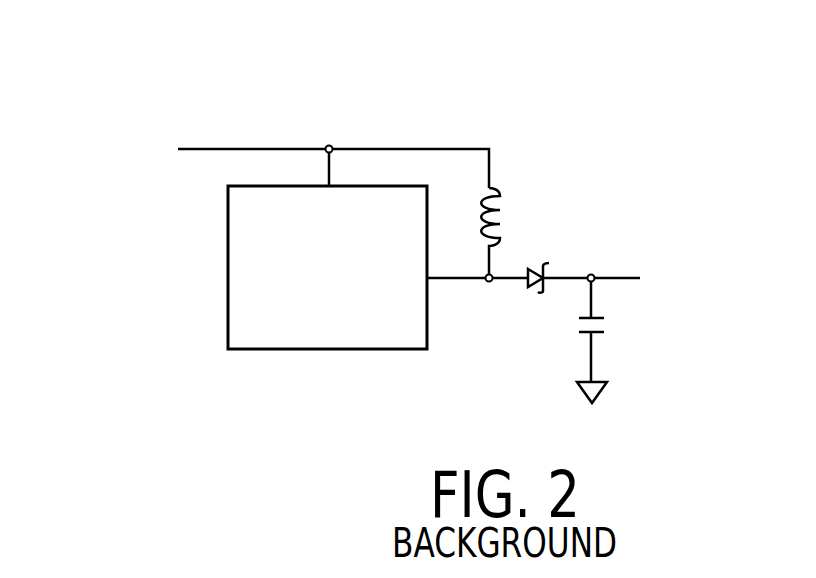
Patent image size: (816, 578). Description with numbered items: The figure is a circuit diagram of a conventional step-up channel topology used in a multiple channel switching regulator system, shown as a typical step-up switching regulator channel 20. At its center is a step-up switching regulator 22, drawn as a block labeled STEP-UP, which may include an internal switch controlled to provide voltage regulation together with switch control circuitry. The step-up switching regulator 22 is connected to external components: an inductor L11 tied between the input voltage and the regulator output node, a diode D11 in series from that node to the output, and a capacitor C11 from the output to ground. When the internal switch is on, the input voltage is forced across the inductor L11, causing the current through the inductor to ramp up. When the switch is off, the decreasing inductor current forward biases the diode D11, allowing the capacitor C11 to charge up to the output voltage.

The step-up switching regulator channel 20 is at (346, 80).
The step-up switching regulator 22 is at (226, 282).
The inductor L11 is at (512, 230).
The diode D11 is at (529, 307).
The capacitor C11 is at (621, 342).